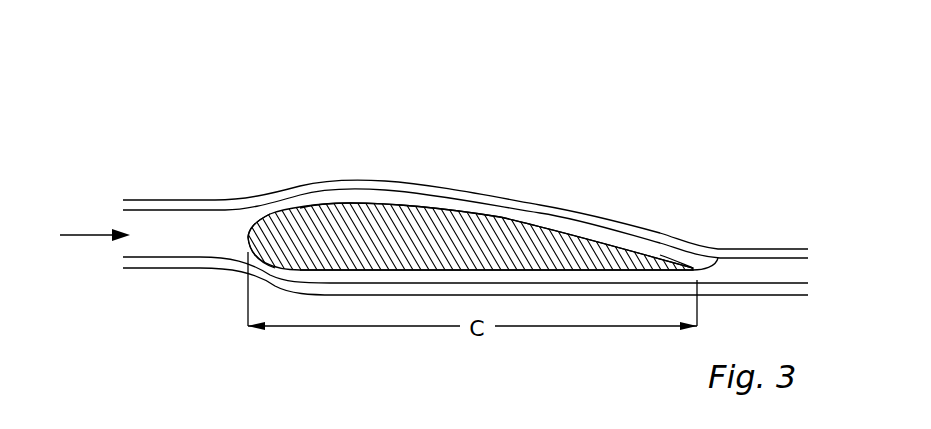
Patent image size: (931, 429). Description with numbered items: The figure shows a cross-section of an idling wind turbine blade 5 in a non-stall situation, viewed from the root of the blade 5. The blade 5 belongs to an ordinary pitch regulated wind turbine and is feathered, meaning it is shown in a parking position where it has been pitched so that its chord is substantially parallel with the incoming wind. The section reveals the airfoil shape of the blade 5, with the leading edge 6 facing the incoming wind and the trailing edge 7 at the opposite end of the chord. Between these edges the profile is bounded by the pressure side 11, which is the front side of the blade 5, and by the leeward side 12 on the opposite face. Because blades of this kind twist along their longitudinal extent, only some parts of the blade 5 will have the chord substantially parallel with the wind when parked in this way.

The blade 5 is at (357, 223).
The leading edge 6 is at (253, 222).
The trailing edge 7 is at (718, 253).
The pressure side 11 is at (410, 272).
The leeward side 12 is at (452, 208).